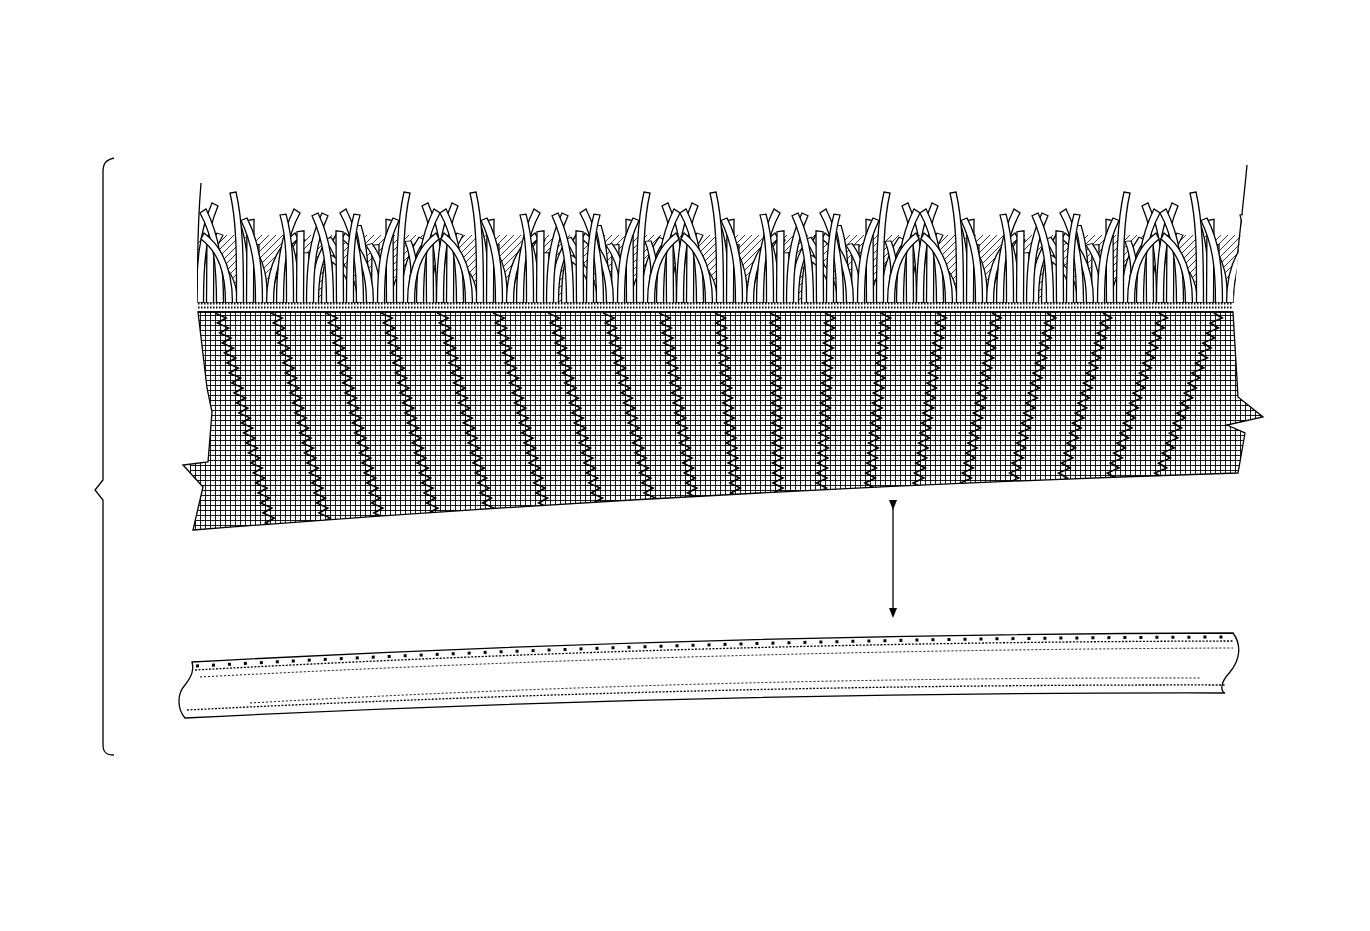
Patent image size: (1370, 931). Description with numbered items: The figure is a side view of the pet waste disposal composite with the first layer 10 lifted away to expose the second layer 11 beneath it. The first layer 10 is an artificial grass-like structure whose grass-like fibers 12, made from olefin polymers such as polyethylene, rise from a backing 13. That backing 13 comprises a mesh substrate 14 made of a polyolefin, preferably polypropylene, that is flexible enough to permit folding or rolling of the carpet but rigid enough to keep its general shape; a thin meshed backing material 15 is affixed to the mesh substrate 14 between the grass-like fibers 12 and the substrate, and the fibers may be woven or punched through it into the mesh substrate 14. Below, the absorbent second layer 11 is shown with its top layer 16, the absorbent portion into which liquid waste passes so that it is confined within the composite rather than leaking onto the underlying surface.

The first layer 10 is at (1287, 201).
The second layer 11 is at (393, 685).
The grass-like fibers 12 is at (1020, 245).
The backing 13 is at (735, 318).
The mesh substrate 14 is at (220, 422).
The meshed backing material 15 is at (197, 272).
The top layer 16 is at (749, 622).